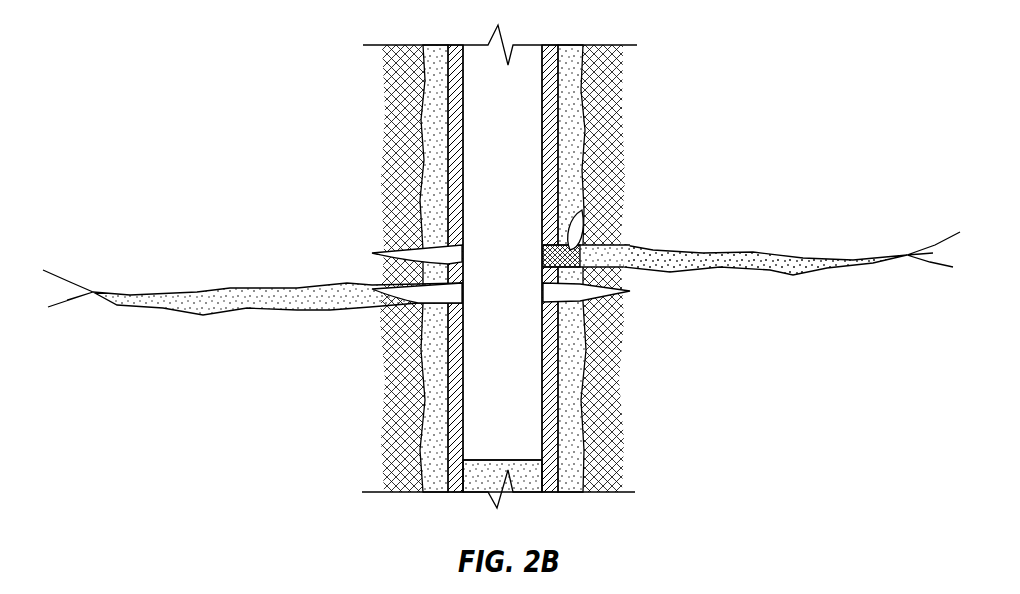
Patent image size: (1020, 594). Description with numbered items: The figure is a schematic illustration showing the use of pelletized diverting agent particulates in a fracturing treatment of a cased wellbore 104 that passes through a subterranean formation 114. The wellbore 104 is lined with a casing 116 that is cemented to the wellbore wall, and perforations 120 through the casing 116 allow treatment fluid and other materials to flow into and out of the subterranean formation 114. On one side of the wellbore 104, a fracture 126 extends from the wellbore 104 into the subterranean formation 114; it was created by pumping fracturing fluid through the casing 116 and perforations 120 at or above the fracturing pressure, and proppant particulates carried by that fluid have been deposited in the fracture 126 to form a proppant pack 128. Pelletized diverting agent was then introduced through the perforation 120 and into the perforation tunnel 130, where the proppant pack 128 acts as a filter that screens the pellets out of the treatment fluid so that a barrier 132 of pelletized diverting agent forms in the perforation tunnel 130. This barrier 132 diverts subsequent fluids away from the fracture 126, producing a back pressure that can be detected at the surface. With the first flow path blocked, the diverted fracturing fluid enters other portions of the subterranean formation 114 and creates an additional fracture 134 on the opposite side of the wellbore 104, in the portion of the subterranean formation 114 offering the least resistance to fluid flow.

The wellbore 104 is at (580, 98).
The subterranean formation 114 is at (644, 368).
The casing 116 is at (557, 145).
The perforations 120 is at (582, 210).
The fracture 126 is at (783, 257).
The proppant pack 128 is at (797, 273).
The perforation tunnel 130 is at (628, 289).
The barrier 132 is at (583, 242).
The additional fracture 134 is at (163, 298).